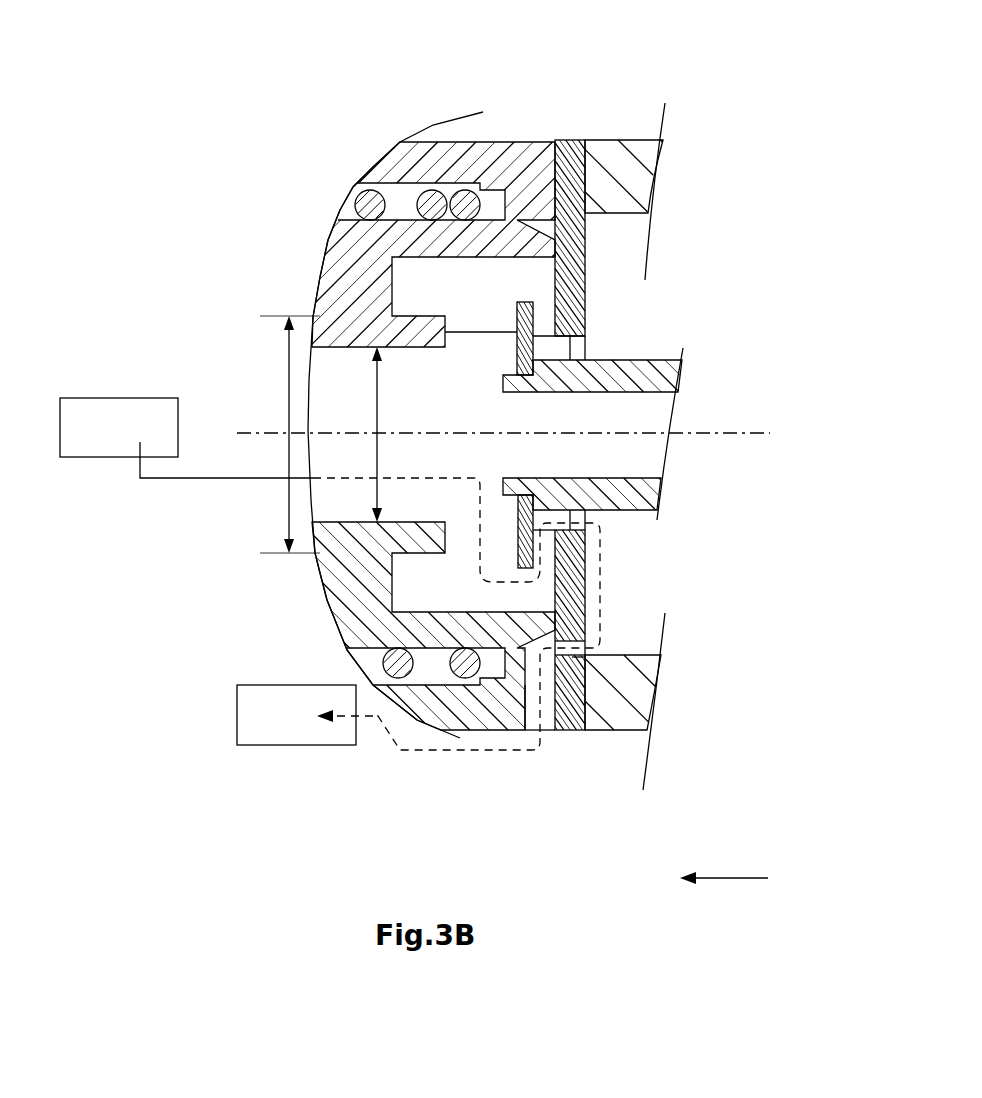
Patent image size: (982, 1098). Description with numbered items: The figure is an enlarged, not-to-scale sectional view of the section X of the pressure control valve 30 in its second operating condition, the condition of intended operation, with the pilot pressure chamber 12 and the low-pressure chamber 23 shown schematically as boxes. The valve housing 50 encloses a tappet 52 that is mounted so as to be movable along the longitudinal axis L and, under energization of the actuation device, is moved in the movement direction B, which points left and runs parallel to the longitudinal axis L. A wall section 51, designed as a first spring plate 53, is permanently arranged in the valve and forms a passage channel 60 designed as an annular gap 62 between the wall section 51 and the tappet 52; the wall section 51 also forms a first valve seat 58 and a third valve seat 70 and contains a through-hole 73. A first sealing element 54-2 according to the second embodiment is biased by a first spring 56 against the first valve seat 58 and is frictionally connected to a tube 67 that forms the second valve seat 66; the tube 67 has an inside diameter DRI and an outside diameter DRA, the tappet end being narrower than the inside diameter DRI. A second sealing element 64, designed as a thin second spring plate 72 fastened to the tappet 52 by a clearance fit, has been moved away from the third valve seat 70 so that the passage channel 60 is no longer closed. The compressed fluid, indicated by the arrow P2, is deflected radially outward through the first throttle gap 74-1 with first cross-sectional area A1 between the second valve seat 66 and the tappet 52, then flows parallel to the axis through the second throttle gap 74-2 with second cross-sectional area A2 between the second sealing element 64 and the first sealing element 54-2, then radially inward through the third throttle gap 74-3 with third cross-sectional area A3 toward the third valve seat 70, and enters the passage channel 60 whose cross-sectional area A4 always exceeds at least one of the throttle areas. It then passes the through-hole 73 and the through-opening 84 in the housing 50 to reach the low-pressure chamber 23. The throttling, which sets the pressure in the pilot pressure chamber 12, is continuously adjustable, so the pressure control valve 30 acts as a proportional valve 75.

The pilot pressure chamber 12 is at (110, 398).
The low-pressure chamber 23 is at (243, 712).
The pressure control valve 30 is at (128, 173).
The proportional valve 75 is at (170, 213).
The valve housing 50 is at (428, 140).
The wall section 51 is at (580, 403).
The first spring plate 53 is at (570, 155).
The tappet 52 is at (641, 512).
The first sealing element 54-2 is at (435, 628).
The first spring 56 is at (375, 195).
The first valve seat 58 is at (580, 625).
The passage channel 60 is at (655, 431).
The annular gap 62 is at (577, 352).
The second sealing element 64 is at (641, 571).
The second spring plate 72 is at (522, 556).
The second valve seat 66 is at (440, 325).
The tube 67 is at (320, 540).
The third valve seat 70 is at (547, 320).
The through-hole 73 is at (572, 657).
The first throttle gap 74-1 is at (383, 94).
The second throttle gap 74-2 is at (562, 162).
The third throttle gap 74-3 is at (653, 219).
The first cross-sectional area A1 is at (433, 187).
The second cross-sectional area A2 is at (527, 300).
The third cross-sectional area A3 is at (540, 335).
The cross-sectional area of the passage channel A4 is at (575, 345).
The through-opening 84 is at (549, 720).
The flow arrow P2 is at (490, 755).
The longitudinal axis L is at (755, 437).
The section X is at (226, 610).
The movement direction B is at (724, 863).
The outside diameter of the tube DRA is at (283, 434).
The inside diameter of the tube DRI is at (358, 434).